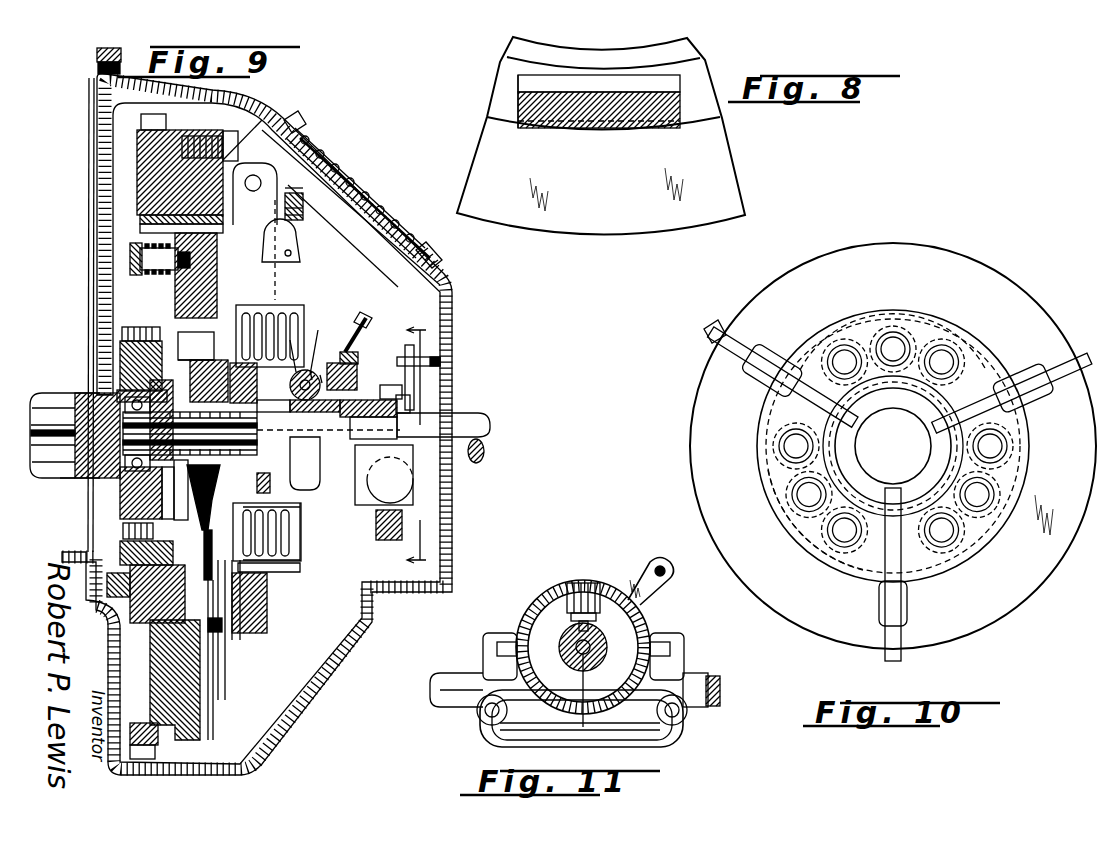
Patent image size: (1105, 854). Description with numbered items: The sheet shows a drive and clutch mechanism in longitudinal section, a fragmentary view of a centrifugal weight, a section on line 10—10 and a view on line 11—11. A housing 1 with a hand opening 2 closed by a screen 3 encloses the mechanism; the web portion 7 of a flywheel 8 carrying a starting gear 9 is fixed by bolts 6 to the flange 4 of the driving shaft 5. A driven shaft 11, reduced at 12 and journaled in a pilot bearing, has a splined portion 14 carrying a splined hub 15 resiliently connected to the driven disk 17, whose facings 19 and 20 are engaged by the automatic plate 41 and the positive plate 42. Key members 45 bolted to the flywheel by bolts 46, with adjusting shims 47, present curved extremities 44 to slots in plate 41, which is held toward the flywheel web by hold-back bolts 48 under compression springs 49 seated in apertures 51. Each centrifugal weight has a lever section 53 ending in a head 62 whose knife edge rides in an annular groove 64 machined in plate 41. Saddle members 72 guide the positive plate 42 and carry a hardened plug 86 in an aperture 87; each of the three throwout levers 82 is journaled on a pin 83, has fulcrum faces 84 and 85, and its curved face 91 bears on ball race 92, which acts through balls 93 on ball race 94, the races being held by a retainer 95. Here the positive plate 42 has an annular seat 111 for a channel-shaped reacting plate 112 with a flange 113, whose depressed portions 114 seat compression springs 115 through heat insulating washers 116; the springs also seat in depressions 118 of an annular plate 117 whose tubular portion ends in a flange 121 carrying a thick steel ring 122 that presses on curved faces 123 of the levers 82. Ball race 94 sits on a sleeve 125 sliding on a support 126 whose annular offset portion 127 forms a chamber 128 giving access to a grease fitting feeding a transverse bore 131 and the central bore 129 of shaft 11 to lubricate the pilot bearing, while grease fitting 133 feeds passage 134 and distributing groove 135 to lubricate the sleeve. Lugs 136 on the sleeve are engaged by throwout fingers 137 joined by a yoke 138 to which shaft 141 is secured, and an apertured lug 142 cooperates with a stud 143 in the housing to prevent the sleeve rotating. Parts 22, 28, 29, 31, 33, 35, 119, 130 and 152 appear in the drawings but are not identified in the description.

In FIG. 9, the housing 1 is at (105, 137).
In FIG. 9, the hand opening 2 is at (372, 240).
In FIG. 9, the screen 3 is at (325, 153).
In FIG. 9, the flange 4 is at (125, 355).
In FIG. 9, the driving shaft 5 is at (60, 479).
In FIG. 9, the bolts 6 is at (128, 324).
In FIG. 9, the web portion 7 is at (135, 548).
In FIG. 9, the flywheel 8 is at (175, 178).
In FIG. 9, the starting gear 9 is at (153, 118).
In FIG. 9, the section line 10— 10 is at (323, 300).
In FIG. 9, the driven shaft 11 is at (421, 443).
In FIG. 9, the reduced portion 12 is at (103, 400).
In FIG. 9, the splined portion 14 is at (137, 398).
In FIG. 9, the splined hub 15 is at (113, 493).
In FIG. 9, the driven disk 17 is at (228, 625).
In FIG. 9, the facing 19 is at (205, 625).
In FIG. 9, the facing 20 is at (232, 632).
In FIG. 9, the thrust washer 22 is at (185, 465).
In FIG. 9, the clutch plate 28 is at (196, 346).
In FIG. 9, the pressure plate 29 is at (201, 317).
In FIG. 9, the spring 31 is at (199, 497).
In FIG. 9, the washer 33 is at (188, 478).
In FIG. 9, the spring 35 is at (170, 502).
In FIG. 9, the automatic plate 41 is at (190, 609).
In FIG. 8, the automatic plate 41 is at (710, 175).
In FIG. 9, the positive plate 42 is at (246, 622).
In FIG. 10, the positive plate 42 is at (712, 437).
In FIG. 9, the curved extremity 44 is at (170, 220).
In FIG. 9, the key member 45 is at (175, 231).
In FIG. 9, the bolts 46 is at (262, 120).
In FIG. 9, the shims 47 is at (210, 136).
In FIG. 9, the hold-back bolts 48 is at (148, 258).
In FIG. 9, the compression springs 49 is at (145, 253).
In FIG. 9, the apertures 51 is at (160, 280).
In FIG. 8, the lever section 53 is at (590, 105).
In FIG. 8, the head 62 is at (670, 82).
In FIG. 9, the annular groove 64 is at (196, 364).
In FIG. 8, the annular groove 64 is at (505, 85).
In FIG. 9, the saddle members 72 is at (300, 200).
In FIG. 10, the throwout levers 82 is at (726, 335).
In FIG. 9, the pin 83 is at (303, 188).
In FIG. 9, the fulcrum face 84 is at (280, 245).
In FIG. 9, the fulcrum face 85 is at (305, 221).
In FIG. 9, the hardened steel plug 86 is at (303, 208).
In FIG. 9, the aperture 87 is at (303, 215).
In FIG. 9, the curved faces 91 is at (273, 414).
In FIG. 9, the ball race 92 is at (291, 338).
In FIG. 9, the anti-friction balls 93 is at (318, 330).
In FIG. 9, the ball race 94 is at (322, 376).
In FIG. 9, the retainer member 95 is at (312, 370).
In FIG. 9, the annular seat 111 is at (238, 630).
In FIG. 9, the annular reacting plate 112 is at (270, 565).
In FIG. 10, the annular reacting plate 112 is at (935, 555).
In FIG. 9, the flange 113 is at (262, 600).
In FIG. 9, the depressed portions 114 is at (245, 537).
In FIG. 9, the compression springs 115 is at (300, 548).
In FIG. 10, the compression springs 115 is at (862, 345).
In FIG. 9, the heat insulating washers 116 is at (285, 568).
In FIG. 9, the annular plate 117 is at (300, 515).
In FIG. 10, the annular plate 117 is at (912, 322).
In FIG. 9, the annular depressions 118 is at (300, 533).
In FIG. 10, the annular depressions 118 is at (800, 495).
In FIG. 10, the arm 119 is at (800, 385).
In FIG. 9, the annular flange 121 is at (267, 408).
In FIG. 9, the steel ring 122 is at (305, 490).
In FIG. 9, the curved faces 123 is at (190, 433).
In FIG. 9, the sleeve 125 is at (340, 335).
In FIG. 9, the support 126 is at (328, 443).
In FIG. 9, the annular offset portion 127 is at (395, 393).
In FIG. 11, the annular offset portion 127 is at (586, 582).
In FIG. 9, the annular chamber 128 is at (402, 410).
In FIG. 11, the central bore 129 is at (600, 727).
In FIG. 11, the shaft 130 is at (440, 700).
In FIG. 9, the transverse bore 131 is at (368, 418).
In FIG. 9, the grease fitting 133 is at (352, 355).
In FIG. 9, the passage 134 is at (357, 375).
In FIG. 9, the lubricant distributing groove 135 is at (315, 414).
In FIG. 9, the lugs 136 is at (384, 475).
In FIG. 11, the lugs 136 is at (485, 655).
In FIG. 9, the throwout fingers 137 is at (485, 455).
In FIG. 11, the throwout fingers 137 is at (507, 643).
In FIG. 9, the yoke 138 is at (440, 531).
In FIG. 11, the yoke 138 is at (520, 735).
In FIG. 11, the shaft 141 is at (712, 694).
In FIG. 9, the lug member 142 is at (412, 346).
In FIG. 11, the lug member 142 is at (653, 562).
In FIG. 9, the stud 143 is at (432, 360).
In FIG. 11, the stud 143 is at (666, 572).
In FIG. 9, the lever 152 is at (400, 411).
In FIG. 11, the lever 152 is at (562, 626).